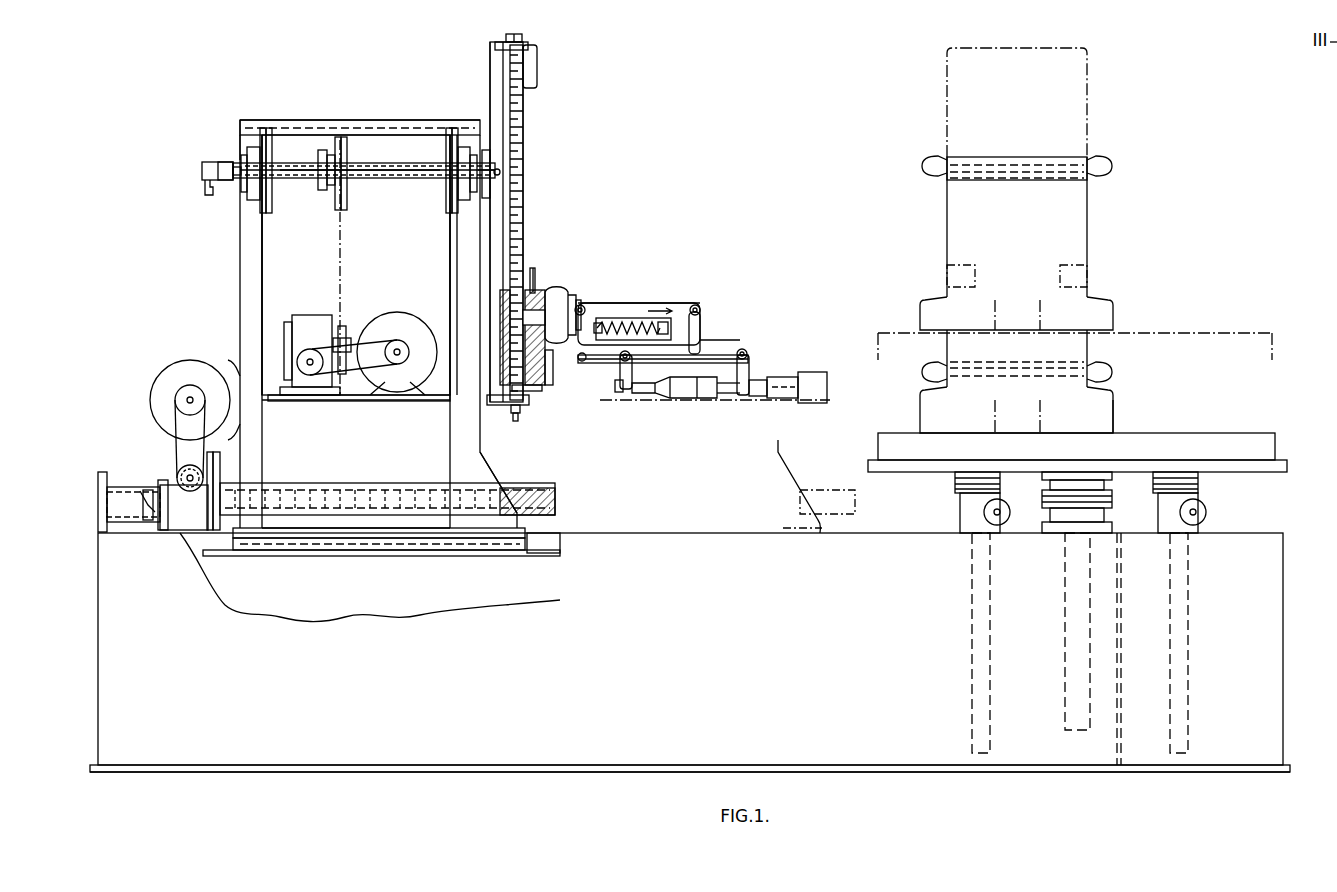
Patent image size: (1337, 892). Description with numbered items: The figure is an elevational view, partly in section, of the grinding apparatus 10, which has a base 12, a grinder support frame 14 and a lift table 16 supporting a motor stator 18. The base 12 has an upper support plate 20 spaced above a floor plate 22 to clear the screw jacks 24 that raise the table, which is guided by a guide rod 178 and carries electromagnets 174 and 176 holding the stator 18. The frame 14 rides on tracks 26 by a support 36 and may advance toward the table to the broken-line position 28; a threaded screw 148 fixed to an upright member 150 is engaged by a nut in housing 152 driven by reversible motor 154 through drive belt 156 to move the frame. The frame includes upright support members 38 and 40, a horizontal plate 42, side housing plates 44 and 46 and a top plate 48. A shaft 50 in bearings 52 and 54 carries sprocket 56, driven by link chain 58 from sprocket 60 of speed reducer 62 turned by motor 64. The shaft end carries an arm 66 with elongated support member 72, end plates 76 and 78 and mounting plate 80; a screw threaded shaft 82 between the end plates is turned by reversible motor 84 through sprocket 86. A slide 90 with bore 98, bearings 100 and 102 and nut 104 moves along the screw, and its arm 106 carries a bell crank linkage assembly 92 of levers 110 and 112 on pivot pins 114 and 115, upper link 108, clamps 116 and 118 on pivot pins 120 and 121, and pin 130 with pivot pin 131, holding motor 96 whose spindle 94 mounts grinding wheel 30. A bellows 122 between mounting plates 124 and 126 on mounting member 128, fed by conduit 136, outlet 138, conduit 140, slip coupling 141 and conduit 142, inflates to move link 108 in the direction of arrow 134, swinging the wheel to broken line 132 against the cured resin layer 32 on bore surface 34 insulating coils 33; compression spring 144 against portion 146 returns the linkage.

The apparatus 10 is at (926, 794).
The base 12 is at (732, 653).
The grinder support frame 14 is at (355, 112).
The lift table 16 is at (1212, 500).
The motor stator 18 is at (1099, 363).
The upper support plate 20 is at (505, 551).
The floor plate 22 is at (362, 772).
The screw jacks 24 is at (972, 644).
The tracks 26 is at (548, 558).
The broken lines 28 is at (490, 460).
The circular grinding wheel 30 is at (812, 381).
The layer of cured resin 32 is at (1020, 177).
The coils and windings 33 is at (930, 162).
The bore surface 34 is at (1040, 168).
The support 36 is at (550, 535).
The upright support member 38 is at (263, 270).
The upright support member 40 is at (450, 274).
The horizontal plate 42 is at (343, 401).
The side housing plate 44 is at (408, 237).
The side housing plate 46 is at (240, 128).
The top plate 48 is at (412, 122).
The shaft 50 is at (410, 178).
The bearing 52 is at (274, 152).
The bearing 54 is at (445, 152).
The sprocket 56 is at (349, 152).
The continuous link chain 58 is at (343, 274).
The sprocket 60 is at (344, 328).
The speed reducer 62 is at (312, 320).
The motor 64 is at (397, 318).
The arm 66 is at (490, 92).
The elongated support member 72 is at (490, 106).
The end plate 76 is at (492, 46).
The end plate 78 is at (499, 405).
The mounting plate 80 is at (483, 200).
The screw threaded shaft 82 is at (523, 126).
The reversible motor 84 is at (537, 68).
The sprocket 86 is at (518, 34).
The slide or mounting block 90 is at (520, 406).
The bell crank linkage assembly 92 is at (708, 312).
The spindle 94 is at (782, 398).
The motor 96 is at (684, 388).
The bore 98 is at (513, 332).
The bearing 100 is at (502, 296).
The bearing 102 is at (500, 386).
The threaded nut 104 is at (500, 375).
The arm 106 is at (575, 338).
The upper link 108 is at (660, 303).
The bell crank lever 110 is at (584, 360).
The bell crank lever 112 is at (696, 332).
The pivot pin 114 is at (620, 360).
The pivot pin 115 is at (697, 398).
The clamp 116 is at (630, 390).
The clamp 118 is at (748, 370).
The pivot pin 120 is at (625, 362).
The pivot pin 121 is at (748, 354).
The inflatable bellows member 122 is at (560, 290).
The mounting plate 124 is at (536, 290).
The mounting plate 126 is at (570, 294).
The mounting member 128 is at (582, 300).
The pin 130 is at (585, 312).
The pivot pin 131 is at (700, 306).
The broken line 132 is at (740, 400).
The arrow 134 is at (662, 312).
The air pressure conduit 136 is at (532, 268).
The outlet 138 is at (500, 172).
The conduit 140 is at (386, 176).
The air tight slip coupling 141 is at (230, 162).
The conduit 142 is at (205, 188).
The helical compression spring 144 is at (630, 316).
The portion of arm 146 is at (702, 340).
The threaded screw 148 is at (323, 486).
The upright member 150 is at (105, 502).
The housing 152 is at (176, 474).
The reversible motor 154 is at (182, 372).
The drive belt 156 is at (177, 455).
The electromagnet 174 is at (918, 414).
The electromagnet 176 is at (1113, 417).
The guide rod 178 is at (1072, 600).